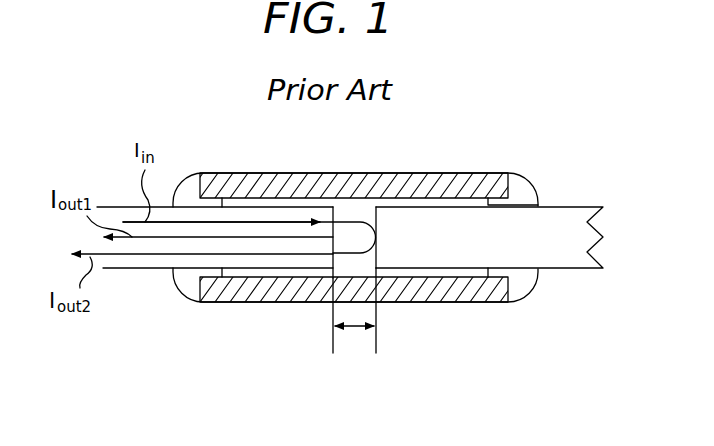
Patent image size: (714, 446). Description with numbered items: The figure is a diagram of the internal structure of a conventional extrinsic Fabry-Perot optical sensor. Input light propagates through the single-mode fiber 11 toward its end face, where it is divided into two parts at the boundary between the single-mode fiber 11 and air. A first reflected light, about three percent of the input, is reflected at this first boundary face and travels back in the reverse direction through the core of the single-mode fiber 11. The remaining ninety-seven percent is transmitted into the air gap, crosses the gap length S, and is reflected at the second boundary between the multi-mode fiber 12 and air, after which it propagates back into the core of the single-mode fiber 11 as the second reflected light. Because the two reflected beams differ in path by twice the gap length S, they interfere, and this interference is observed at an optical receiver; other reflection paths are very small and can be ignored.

The single-mode fiber 11 is at (120, 270).
The multi-mode fiber 12 is at (567, 263).
The gap length S is at (354, 313).